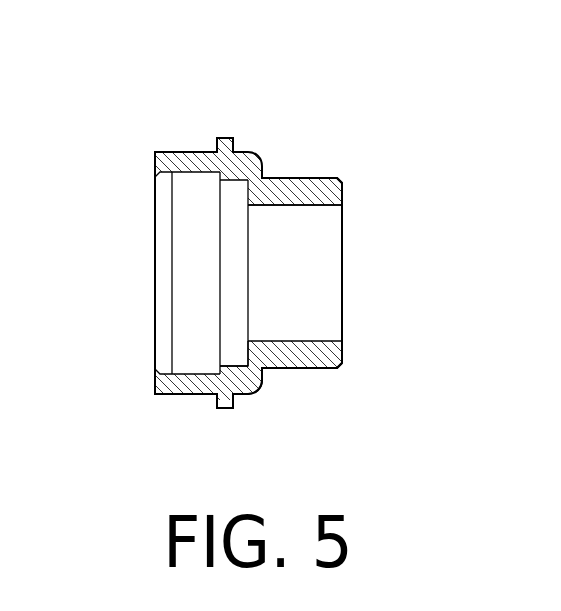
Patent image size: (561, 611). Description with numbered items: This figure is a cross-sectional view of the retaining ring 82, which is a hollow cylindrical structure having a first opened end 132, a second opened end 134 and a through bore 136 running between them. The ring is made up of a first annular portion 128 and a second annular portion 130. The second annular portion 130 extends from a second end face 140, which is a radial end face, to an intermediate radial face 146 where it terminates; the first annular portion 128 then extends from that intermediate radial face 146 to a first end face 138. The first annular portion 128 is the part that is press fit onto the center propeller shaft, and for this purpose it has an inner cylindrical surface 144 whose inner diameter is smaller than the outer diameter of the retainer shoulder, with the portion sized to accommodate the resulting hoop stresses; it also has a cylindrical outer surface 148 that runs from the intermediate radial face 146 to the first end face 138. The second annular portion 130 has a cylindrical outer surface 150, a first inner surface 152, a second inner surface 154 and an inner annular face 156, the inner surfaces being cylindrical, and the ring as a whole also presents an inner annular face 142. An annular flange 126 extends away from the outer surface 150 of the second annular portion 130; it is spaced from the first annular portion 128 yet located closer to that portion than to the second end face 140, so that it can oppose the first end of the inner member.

The retaining ring 82 is at (270, 118).
The flange 126 is at (226, 137).
The first annular portion 128 is at (312, 168).
The second annular portion 130 is at (178, 142).
The first opened end 132 is at (343, 300).
The second opened end 134 is at (155, 278).
The through bore 136 is at (314, 296).
The first end face 138 is at (343, 191).
The second end face 140 is at (155, 153).
The inner annular face 142 is at (222, 192).
The inner cylindrical surface 144 is at (313, 205).
The intermediate radial face 146 is at (272, 388).
The outer surface 148 is at (310, 369).
The outer surface 150 is at (188, 395).
The first inner surface 152 is at (235, 365).
The second inner surface 154 is at (200, 173).
The inner annular face 156 is at (217, 376).